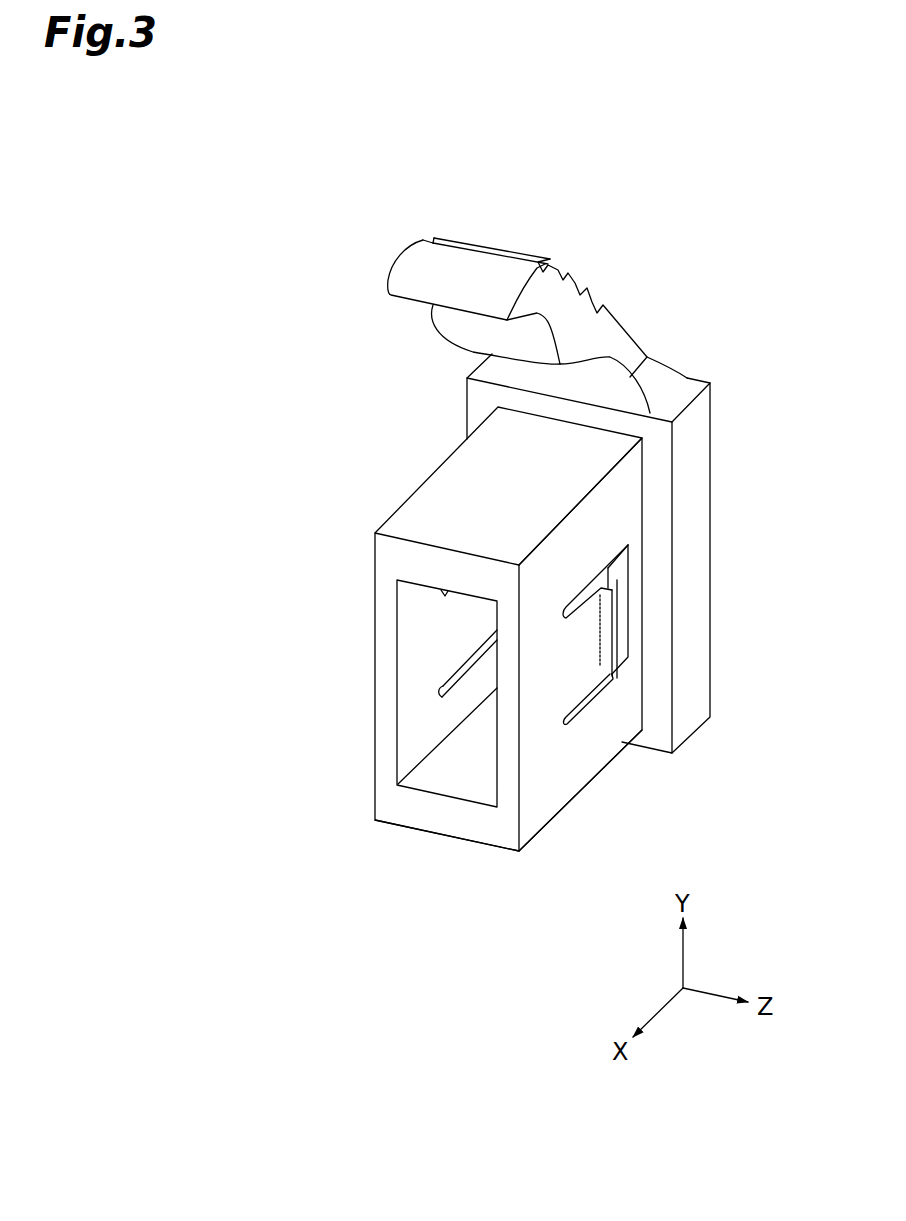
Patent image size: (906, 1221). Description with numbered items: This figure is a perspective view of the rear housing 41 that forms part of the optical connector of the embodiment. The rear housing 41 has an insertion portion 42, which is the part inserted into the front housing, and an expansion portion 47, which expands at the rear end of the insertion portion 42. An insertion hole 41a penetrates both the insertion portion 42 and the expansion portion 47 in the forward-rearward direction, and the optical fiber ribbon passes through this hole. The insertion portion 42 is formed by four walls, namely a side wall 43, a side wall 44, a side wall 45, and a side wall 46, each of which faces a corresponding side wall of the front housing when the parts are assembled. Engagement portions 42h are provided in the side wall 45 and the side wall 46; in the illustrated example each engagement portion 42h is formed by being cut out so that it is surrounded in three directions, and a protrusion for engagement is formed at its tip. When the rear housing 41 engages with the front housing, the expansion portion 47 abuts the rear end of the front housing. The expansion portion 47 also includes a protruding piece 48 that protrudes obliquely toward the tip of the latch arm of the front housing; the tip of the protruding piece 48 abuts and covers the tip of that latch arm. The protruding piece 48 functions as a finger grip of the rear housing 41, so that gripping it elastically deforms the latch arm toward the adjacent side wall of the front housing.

The rear housing 41 is at (368, 228).
The insertion hole 41a is at (397, 737).
The insertion portion 42 is at (439, 462).
The engagement portion 42h is at (592, 637).
The side wall 43 is at (423, 513).
The side wall 44 is at (462, 845).
The side wall 45 is at (557, 787).
The side wall 46 is at (373, 673).
The expansion portion 47 is at (698, 523).
The protruding piece 48 is at (563, 297).